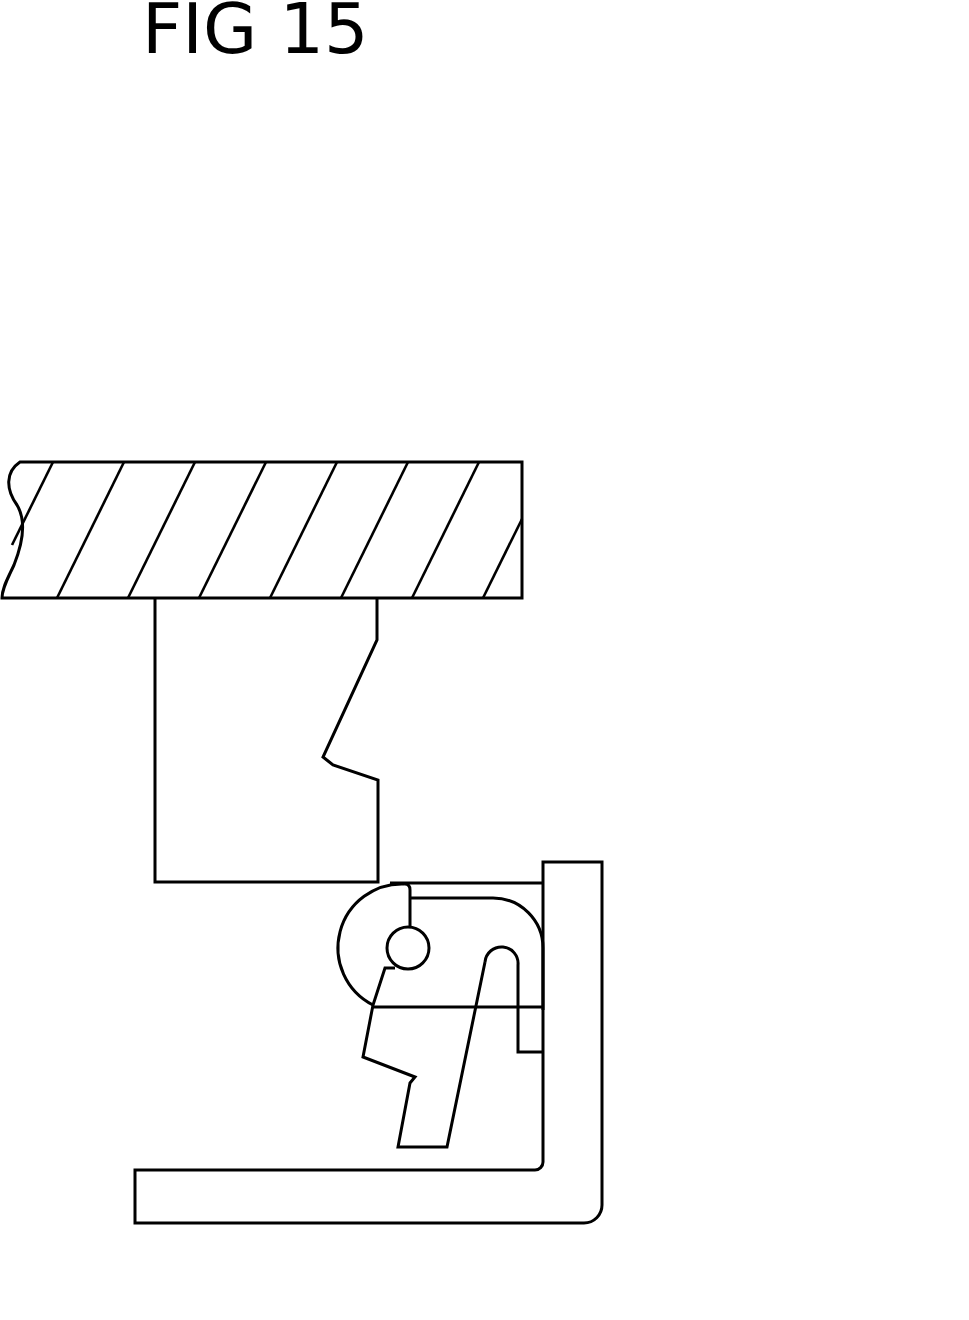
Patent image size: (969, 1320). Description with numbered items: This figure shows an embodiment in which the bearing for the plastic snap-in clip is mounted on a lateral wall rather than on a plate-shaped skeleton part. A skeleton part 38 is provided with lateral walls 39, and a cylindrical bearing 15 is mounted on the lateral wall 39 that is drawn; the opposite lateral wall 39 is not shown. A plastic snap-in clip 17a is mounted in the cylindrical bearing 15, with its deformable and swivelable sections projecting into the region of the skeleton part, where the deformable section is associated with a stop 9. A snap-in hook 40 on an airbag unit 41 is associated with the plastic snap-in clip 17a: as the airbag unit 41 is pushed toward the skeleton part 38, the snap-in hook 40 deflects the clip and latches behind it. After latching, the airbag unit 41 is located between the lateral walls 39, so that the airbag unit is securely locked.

The airbag unit 41 is at (427, 485).
The snap-in hook 40 is at (302, 713).
The lateral wall 39 is at (573, 932).
The skeleton part 38 is at (630, 1095).
The stop 9 is at (550, 982).
The cylindrical bearing 15 is at (402, 947).
The plastic snap-in clip 17a is at (318, 1053).